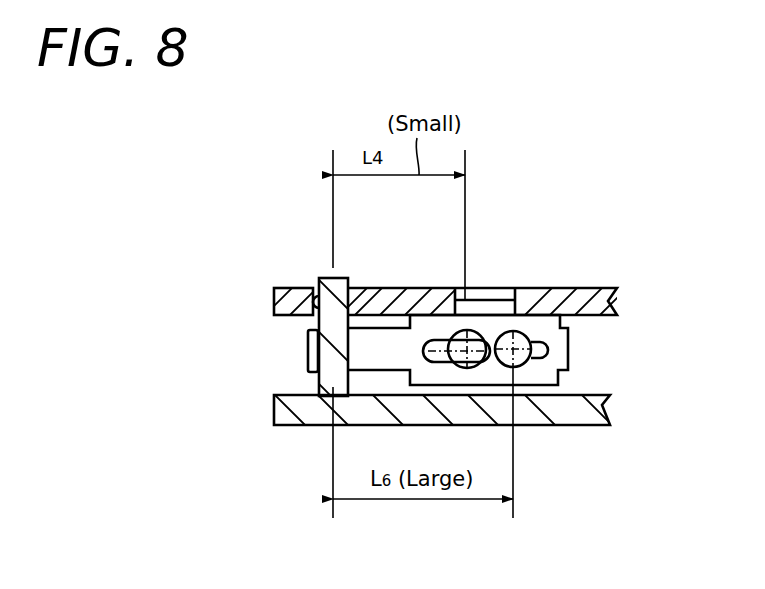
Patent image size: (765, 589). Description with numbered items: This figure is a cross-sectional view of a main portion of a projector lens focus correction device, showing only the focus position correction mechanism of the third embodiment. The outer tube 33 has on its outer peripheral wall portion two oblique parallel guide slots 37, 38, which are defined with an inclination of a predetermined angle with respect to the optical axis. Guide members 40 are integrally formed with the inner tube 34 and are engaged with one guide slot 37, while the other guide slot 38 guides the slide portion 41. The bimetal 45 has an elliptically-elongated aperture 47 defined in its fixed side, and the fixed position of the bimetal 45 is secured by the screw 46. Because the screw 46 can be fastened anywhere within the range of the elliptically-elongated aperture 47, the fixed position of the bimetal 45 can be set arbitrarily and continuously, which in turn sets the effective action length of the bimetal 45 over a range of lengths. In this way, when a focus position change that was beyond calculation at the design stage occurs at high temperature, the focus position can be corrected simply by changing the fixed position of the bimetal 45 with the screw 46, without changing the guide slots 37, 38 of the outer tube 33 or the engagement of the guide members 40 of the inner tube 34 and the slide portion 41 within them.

The outer tube 33 is at (612, 300).
The inner tube 34 is at (580, 424).
The guide slot 37 is at (314, 318).
The guide slot 38 is at (518, 290).
The guide member 40 is at (326, 278).
The slide portion 41 is at (485, 306).
The bimetal 45 is at (372, 350).
The screw 46 is at (514, 362).
The elliptically-elongated aperture 47 is at (567, 362).